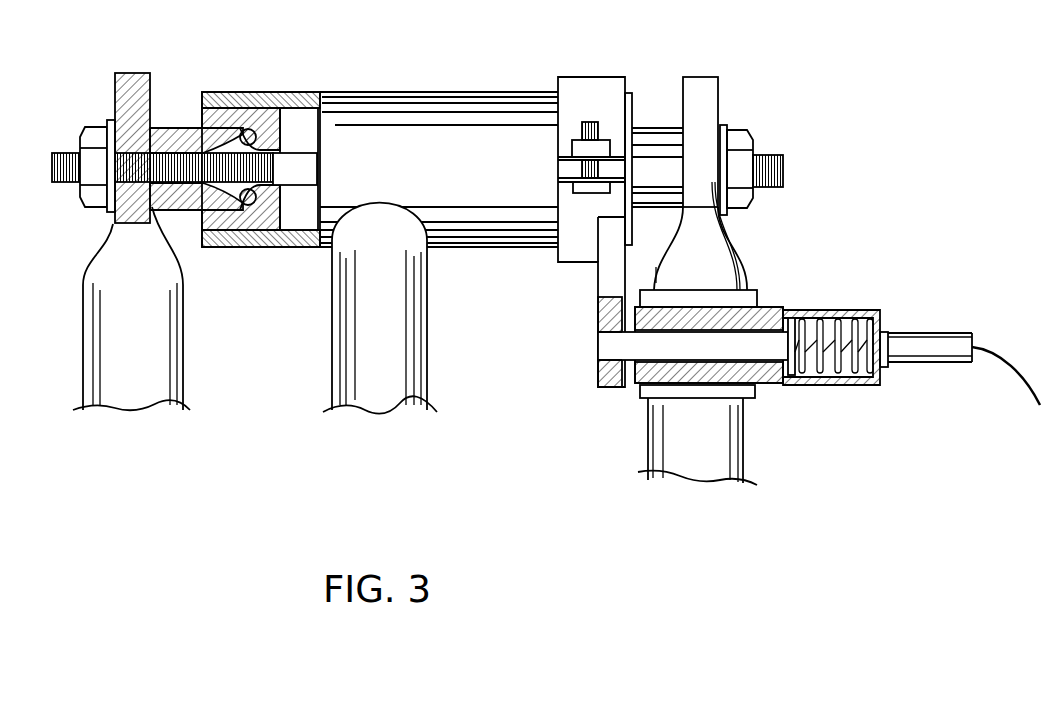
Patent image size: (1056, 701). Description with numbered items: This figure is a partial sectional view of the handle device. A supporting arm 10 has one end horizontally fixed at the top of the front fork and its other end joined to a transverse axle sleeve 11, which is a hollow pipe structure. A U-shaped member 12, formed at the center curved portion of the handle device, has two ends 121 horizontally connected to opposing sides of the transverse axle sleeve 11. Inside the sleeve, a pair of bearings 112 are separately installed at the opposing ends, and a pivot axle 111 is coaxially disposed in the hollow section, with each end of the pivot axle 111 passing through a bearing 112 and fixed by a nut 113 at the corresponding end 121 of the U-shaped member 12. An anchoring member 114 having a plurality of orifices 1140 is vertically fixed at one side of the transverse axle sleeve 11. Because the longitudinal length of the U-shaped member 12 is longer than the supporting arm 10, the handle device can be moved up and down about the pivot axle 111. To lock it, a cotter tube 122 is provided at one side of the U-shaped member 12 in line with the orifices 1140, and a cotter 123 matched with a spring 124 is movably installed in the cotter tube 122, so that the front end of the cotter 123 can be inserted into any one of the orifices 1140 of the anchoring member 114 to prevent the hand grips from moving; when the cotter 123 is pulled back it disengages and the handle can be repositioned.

The supporting arm 10 is at (337, 363).
The transverse axle sleeve 11 is at (423, 103).
The U-shaped member 12 is at (723, 265).
The pivot axle 111 is at (65, 152).
The bearings 112 is at (175, 135).
The nut 113 is at (92, 135).
The anchoring member 114 is at (607, 280).
The ends of the U-shaped member 121 is at (137, 80).
The cotter tube 122 is at (842, 312).
The cotter 123 is at (763, 355).
The spring 124 is at (848, 377).
The orifices 1140 is at (598, 347).